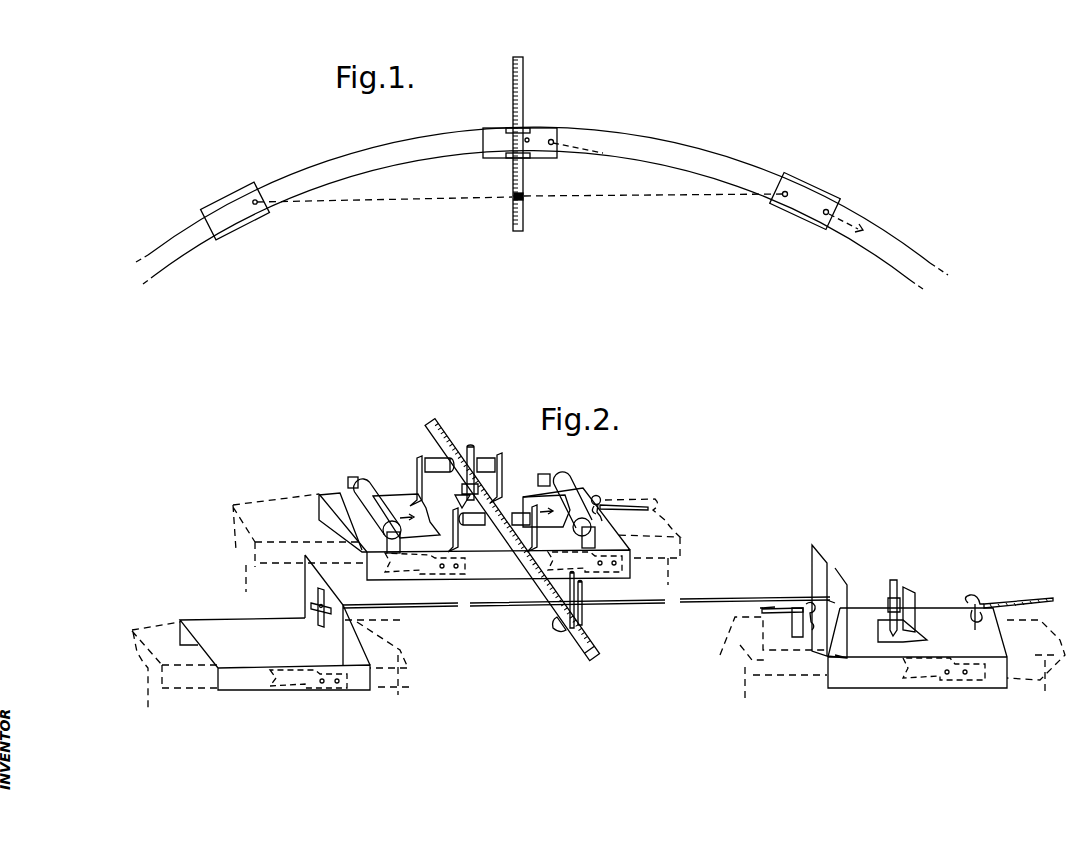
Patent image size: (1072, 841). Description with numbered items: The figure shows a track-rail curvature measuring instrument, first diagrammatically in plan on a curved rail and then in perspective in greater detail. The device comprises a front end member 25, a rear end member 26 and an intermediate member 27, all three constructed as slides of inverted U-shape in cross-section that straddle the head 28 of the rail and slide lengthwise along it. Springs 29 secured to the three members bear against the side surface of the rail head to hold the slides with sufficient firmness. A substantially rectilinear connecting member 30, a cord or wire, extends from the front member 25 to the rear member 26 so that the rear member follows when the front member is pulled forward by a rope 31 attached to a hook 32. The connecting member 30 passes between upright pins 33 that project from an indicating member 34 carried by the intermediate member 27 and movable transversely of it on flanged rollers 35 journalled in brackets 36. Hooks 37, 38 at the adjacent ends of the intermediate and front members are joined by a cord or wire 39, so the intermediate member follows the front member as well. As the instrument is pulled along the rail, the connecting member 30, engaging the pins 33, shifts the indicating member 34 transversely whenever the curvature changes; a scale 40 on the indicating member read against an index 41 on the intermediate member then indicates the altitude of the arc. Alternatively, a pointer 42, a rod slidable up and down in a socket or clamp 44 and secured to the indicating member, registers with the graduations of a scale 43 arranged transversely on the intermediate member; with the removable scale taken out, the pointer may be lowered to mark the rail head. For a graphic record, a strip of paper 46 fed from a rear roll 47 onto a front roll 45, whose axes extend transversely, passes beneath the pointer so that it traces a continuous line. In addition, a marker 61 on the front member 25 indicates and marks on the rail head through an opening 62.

In FIG. 1, the front end member 25 is at (805, 211).
In FIG. 2, the front end member 25 is at (945, 610).
In FIG. 1, the rear end member 26 is at (244, 220).
In FIG. 2, the rear end member 26 is at (213, 622).
In FIG. 1, the intermediate member 27 is at (494, 133).
In FIG. 2, the intermediate member 27 is at (330, 496).
In FIG. 1, the rail head 28 is at (365, 152).
In FIG. 2, the rail head 28 is at (251, 503).
In FIG. 2, the springs 29 is at (407, 565).
In FIG. 1, the connecting member 30 is at (620, 195).
In FIG. 2, the connecting member 30 is at (502, 606).
In FIG. 1, the rope 31 is at (866, 227).
In FIG. 2, the rope 31 is at (1022, 602).
In FIG. 2, the hook 32 is at (985, 621).
In FIG. 1, the upright pins 33 is at (515, 200).
In FIG. 2, the upright pins 33 is at (581, 585).
In FIG. 1, the indicating member 34 is at (524, 173).
In FIG. 2, the indicating member 34 is at (576, 640).
In FIG. 2, the flanged rollers 35 is at (447, 465).
In FIG. 2, the brackets 36 is at (415, 470).
In FIG. 1, the hook 37 is at (556, 138).
In FIG. 2, the hook 37 is at (597, 496).
In FIG. 2, the hook 38 is at (813, 602).
In FIG. 1, the cord or wire 39 is at (604, 152).
In FIG. 2, the cord or wire 39 is at (640, 507).
In FIG. 1, the scale 40 is at (523, 103).
In FIG. 2, the scale 40 is at (540, 584).
In FIG. 1, the index 41 is at (531, 138).
In FIG. 2, the pointer 42 is at (473, 447).
In FIG. 2, the scale 43 is at (497, 528).
In FIG. 2, the socket or clamp 44 is at (462, 490).
In FIG. 2, the front roll 45 is at (566, 492).
In FIG. 2, the strip of paper 46 is at (397, 498).
In FIG. 2, the rear roll 47 is at (364, 480).
In FIG. 2, the marker 61 is at (890, 584).
In FIG. 2, the opening 62 is at (897, 636).